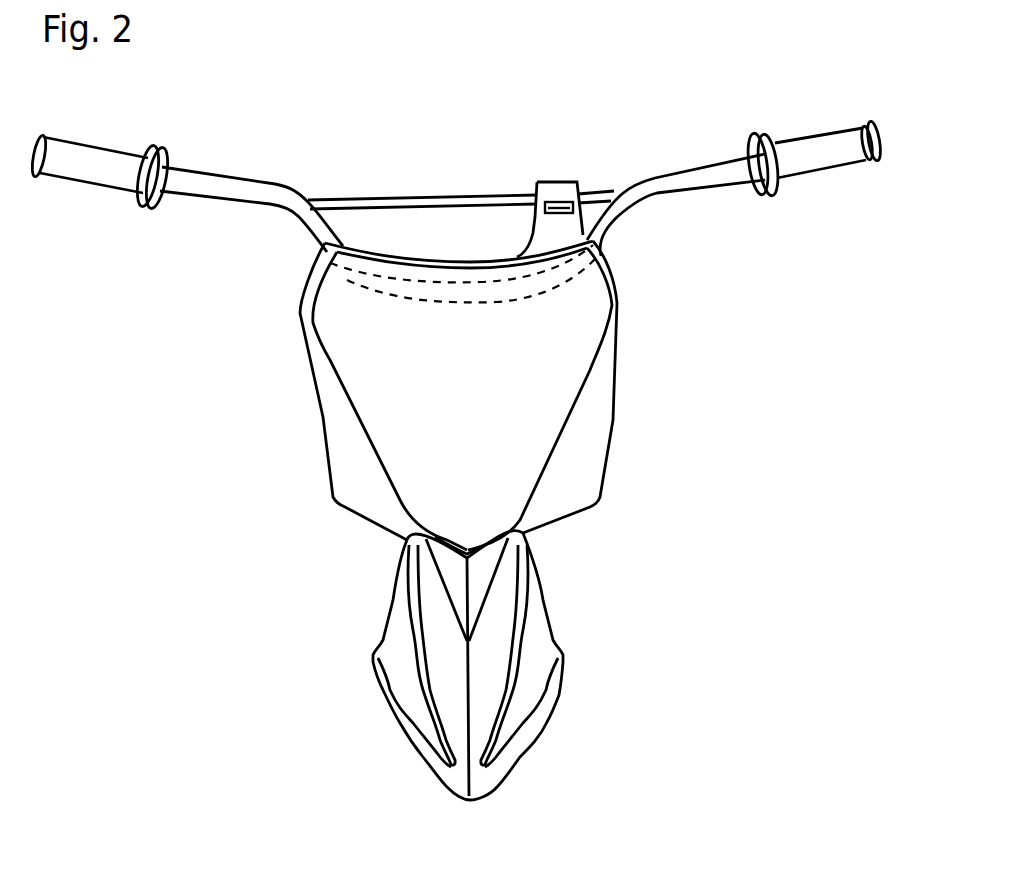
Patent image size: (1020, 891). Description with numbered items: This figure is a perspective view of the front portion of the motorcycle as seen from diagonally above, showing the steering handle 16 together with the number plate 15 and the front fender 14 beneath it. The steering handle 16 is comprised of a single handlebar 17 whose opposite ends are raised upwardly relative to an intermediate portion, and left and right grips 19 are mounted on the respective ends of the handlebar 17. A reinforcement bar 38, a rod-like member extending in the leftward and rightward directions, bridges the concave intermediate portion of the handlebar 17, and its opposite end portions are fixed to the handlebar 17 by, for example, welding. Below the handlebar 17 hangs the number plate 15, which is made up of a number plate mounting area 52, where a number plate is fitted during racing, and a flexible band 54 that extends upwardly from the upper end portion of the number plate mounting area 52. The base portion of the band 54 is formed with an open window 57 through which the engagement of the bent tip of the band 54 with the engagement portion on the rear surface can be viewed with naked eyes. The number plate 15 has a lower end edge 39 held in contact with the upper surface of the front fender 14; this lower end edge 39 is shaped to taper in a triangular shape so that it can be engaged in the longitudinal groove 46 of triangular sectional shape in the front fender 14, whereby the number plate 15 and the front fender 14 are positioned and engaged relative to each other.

The front fender 14 is at (511, 664).
The number plate 15 is at (503, 395).
The steering handle 16 is at (456, 162).
The handlebar 17 is at (306, 214).
The grips 19 is at (107, 163).
The reinforcement bar 38 is at (468, 200).
The lower end edge 39 is at (482, 553).
The longitudinal groove 46 is at (483, 583).
The number plate mounting area 52 is at (583, 300).
The flexible band 54 is at (570, 190).
The open window 57 is at (563, 203).